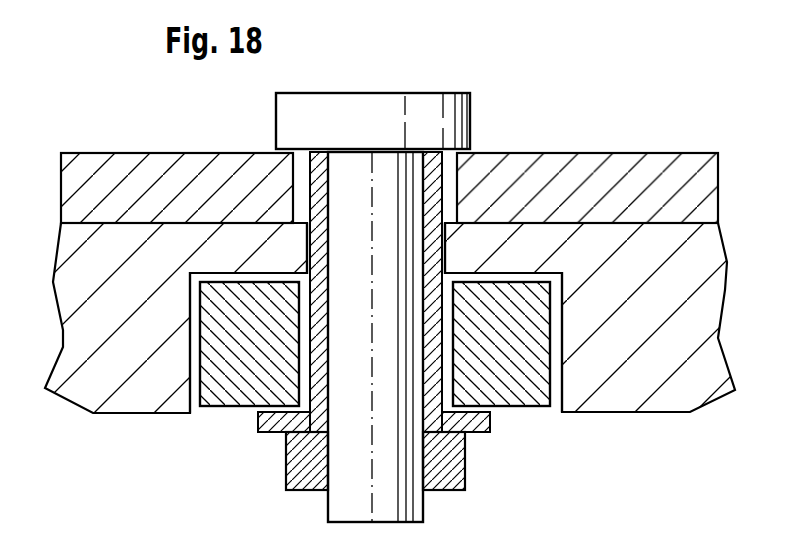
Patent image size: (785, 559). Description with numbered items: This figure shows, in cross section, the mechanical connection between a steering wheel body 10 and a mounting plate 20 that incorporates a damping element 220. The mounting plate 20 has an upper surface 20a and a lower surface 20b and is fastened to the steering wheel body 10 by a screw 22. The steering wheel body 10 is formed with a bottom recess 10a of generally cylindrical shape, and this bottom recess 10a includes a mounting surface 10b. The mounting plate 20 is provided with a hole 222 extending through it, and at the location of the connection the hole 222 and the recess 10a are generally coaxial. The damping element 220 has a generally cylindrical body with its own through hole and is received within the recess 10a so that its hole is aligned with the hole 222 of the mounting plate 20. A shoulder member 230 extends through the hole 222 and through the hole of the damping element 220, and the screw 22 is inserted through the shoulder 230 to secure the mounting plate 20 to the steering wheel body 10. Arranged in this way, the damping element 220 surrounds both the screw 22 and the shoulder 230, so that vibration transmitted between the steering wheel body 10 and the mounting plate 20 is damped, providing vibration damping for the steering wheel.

The steering wheel body 10 is at (676, 260).
The bottom recess 10a is at (522, 414).
The mounting surface 10b is at (537, 273).
The mounting plate 20 is at (552, 187).
The upper surface 20a is at (113, 153).
The lower surface 20b is at (68, 226).
The screw 22 is at (461, 74).
The damping element 220 is at (217, 337).
The hole 222 is at (291, 197).
The shoulder member 230 is at (263, 421).